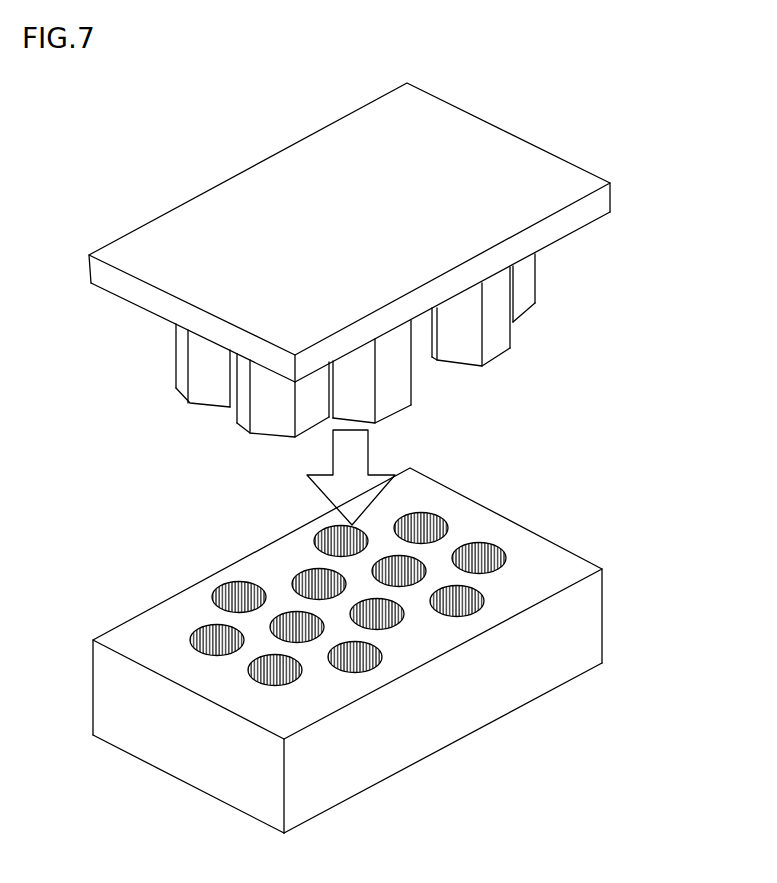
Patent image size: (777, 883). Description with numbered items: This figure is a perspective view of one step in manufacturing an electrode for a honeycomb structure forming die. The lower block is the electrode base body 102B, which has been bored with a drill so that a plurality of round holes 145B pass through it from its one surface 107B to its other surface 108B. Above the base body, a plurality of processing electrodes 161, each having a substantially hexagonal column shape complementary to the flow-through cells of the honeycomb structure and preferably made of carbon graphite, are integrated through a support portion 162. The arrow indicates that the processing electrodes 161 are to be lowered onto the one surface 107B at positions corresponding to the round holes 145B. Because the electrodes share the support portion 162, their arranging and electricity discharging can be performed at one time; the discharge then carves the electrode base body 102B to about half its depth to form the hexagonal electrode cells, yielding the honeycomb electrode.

The support portion 162 is at (607, 202).
The processing electrodes 161 is at (205, 397).
The round holes 145B is at (483, 562).
The one surface 107B is at (567, 563).
The electrode base body 102B is at (592, 607).
The other surface 108B is at (555, 668).